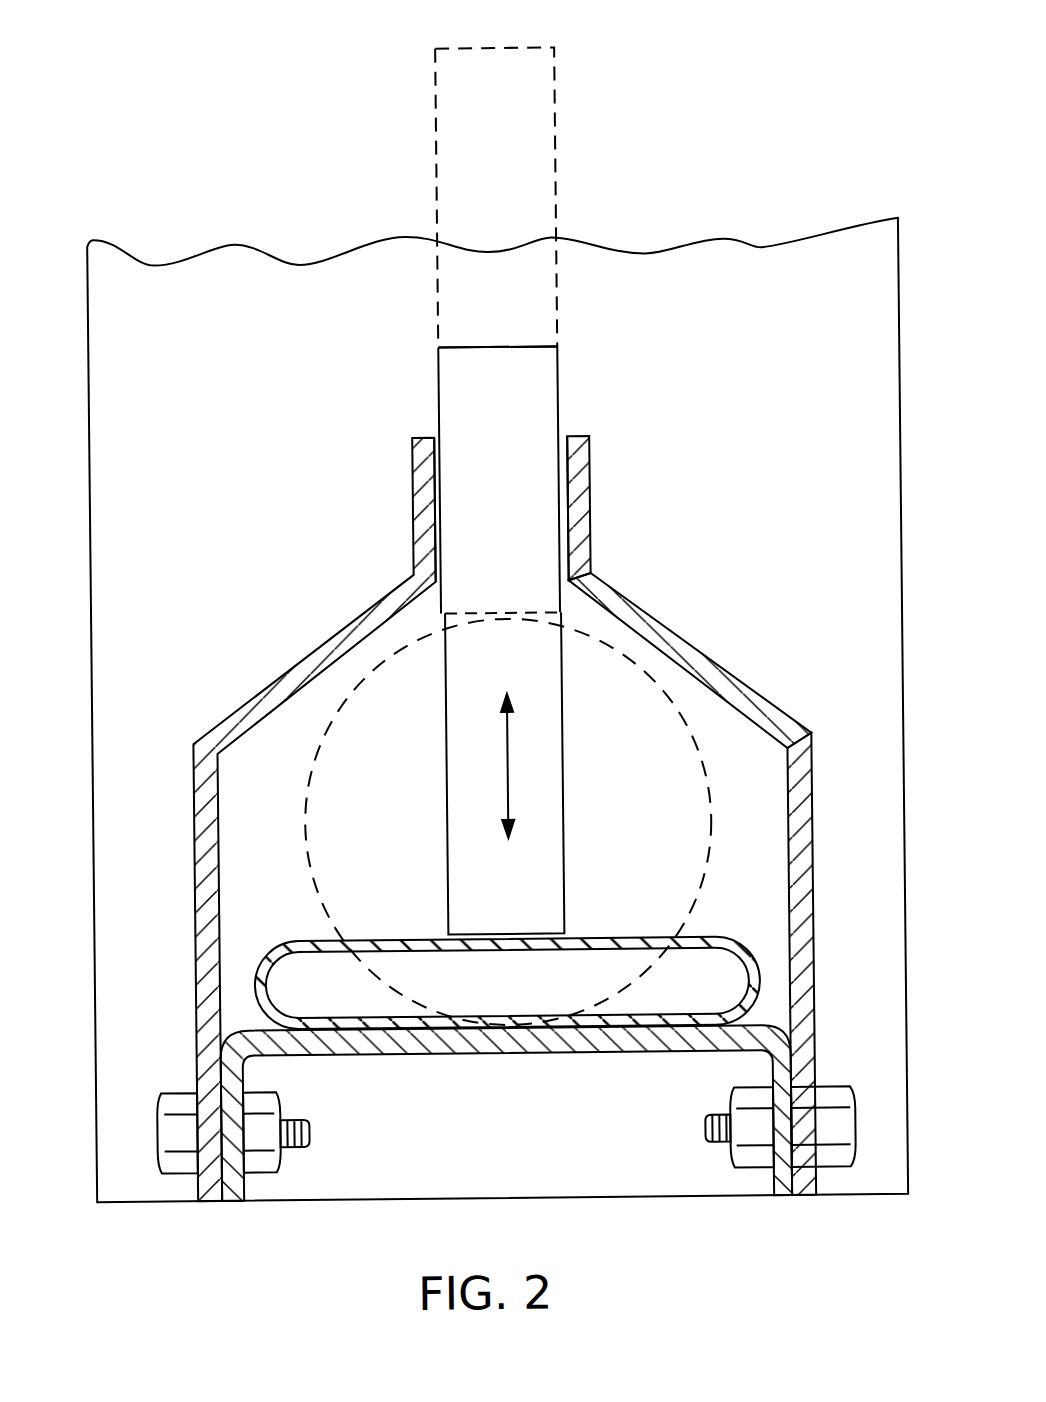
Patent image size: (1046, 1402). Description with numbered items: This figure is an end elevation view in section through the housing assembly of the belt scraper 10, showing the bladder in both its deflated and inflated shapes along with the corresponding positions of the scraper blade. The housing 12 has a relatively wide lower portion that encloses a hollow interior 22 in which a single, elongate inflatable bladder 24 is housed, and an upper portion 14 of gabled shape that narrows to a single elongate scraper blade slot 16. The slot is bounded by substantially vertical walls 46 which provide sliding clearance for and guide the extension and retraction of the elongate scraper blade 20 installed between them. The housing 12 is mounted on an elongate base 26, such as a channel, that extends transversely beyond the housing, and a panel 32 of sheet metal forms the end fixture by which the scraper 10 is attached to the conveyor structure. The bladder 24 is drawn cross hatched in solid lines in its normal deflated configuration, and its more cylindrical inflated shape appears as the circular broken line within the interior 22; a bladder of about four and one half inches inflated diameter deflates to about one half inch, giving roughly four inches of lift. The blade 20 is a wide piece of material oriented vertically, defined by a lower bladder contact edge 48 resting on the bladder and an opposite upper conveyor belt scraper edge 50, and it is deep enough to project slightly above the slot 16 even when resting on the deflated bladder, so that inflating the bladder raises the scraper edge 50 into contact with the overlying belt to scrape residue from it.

The belt scraper 10 is at (701, 1239).
The housing 12 is at (194, 928).
The upper portion 14 is at (674, 640).
The scraper blade slot 16 is at (577, 436).
The scraper blade 20 is at (443, 157).
The hollow interior 22 is at (775, 887).
The inflatable bladder 24 is at (317, 843).
The base 26 is at (595, 1053).
The panel 32 is at (241, 471).
The vertical walls 46 is at (571, 497).
The bladder contact edge 48 is at (531, 624).
The conveyor belt scraper edge 50 is at (538, 39).